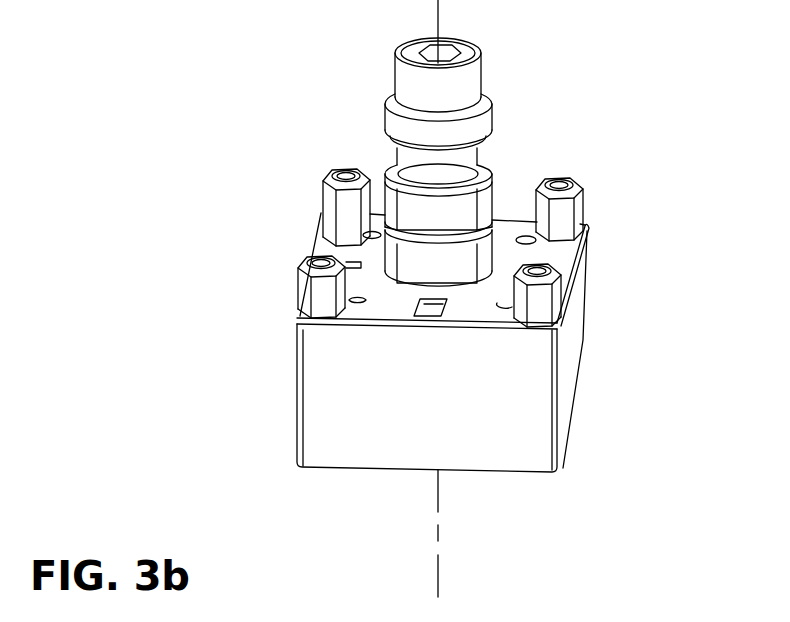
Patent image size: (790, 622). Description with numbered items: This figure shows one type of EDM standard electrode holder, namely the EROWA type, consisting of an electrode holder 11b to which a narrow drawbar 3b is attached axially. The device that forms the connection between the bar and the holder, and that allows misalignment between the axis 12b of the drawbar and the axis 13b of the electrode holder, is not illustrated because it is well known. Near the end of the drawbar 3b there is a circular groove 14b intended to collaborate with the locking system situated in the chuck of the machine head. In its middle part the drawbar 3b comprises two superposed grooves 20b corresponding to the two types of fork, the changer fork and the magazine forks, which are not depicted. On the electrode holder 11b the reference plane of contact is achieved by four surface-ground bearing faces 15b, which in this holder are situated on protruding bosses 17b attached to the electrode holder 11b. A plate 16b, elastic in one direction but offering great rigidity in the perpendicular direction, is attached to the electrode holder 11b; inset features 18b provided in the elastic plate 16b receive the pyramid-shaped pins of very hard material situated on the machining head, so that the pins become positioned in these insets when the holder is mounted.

The drawbar 3b is at (496, 118).
The electrode holder 11b is at (500, 355).
The axis of the drawbar 12b is at (441, 3).
The axis of the electrode holder 13b is at (439, 535).
The circular groove 14b is at (462, 177).
The bearing faces 15b is at (346, 174).
The plate 16b is at (466, 307).
The protruding bosses 17b is at (347, 207).
The inset features 18b is at (376, 262).
The superposed grooves 20b is at (432, 272).